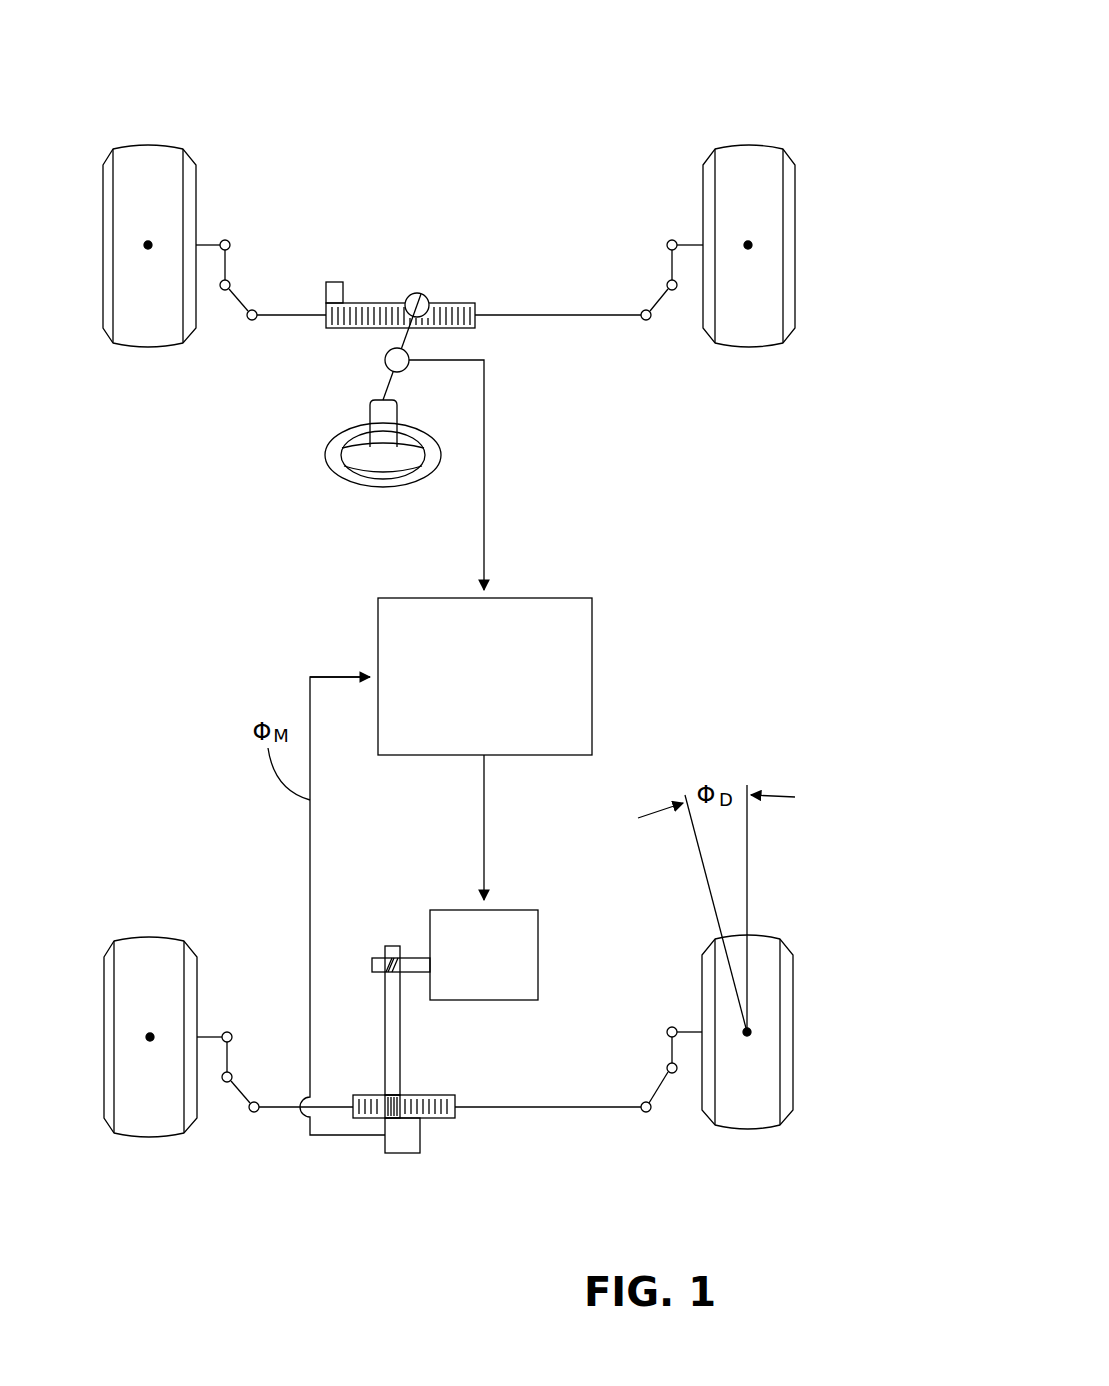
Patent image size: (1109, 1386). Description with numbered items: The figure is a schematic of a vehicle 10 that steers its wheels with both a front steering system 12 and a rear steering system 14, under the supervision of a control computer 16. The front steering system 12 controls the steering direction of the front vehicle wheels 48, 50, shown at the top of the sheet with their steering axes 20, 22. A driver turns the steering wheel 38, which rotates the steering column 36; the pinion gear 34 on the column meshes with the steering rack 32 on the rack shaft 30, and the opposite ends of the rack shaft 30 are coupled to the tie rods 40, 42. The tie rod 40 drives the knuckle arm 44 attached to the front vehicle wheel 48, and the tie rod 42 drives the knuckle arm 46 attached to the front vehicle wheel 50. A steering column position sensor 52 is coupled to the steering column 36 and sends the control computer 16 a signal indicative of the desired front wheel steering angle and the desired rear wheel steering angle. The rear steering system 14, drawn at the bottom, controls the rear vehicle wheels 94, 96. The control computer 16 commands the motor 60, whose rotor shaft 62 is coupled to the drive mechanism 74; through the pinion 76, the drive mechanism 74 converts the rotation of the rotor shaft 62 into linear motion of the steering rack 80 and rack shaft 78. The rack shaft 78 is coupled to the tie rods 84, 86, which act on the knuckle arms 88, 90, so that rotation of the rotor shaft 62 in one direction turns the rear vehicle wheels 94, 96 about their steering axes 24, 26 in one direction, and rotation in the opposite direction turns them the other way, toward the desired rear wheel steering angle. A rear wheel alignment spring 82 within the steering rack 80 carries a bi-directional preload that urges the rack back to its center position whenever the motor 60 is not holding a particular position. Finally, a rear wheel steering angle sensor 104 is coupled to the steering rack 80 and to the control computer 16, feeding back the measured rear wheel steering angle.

The vehicle 10 is at (720, 112).
The front steering system 12 is at (836, 190).
The rear steering system 14 is at (833, 982).
The control computer 16 is at (592, 637).
The front left wheel 20 is at (146, 249).
The front right wheel 22 is at (750, 248).
The steering axis 24 is at (148, 1035).
The steering axis 26 is at (750, 1035).
The rack shaft 30 is at (553, 313).
The steering rack 32 is at (368, 303).
The pinion gear 34 is at (420, 296).
The steering column 36 is at (392, 378).
The steering wheel 38 is at (353, 478).
The tie rod 40 is at (248, 300).
The tie rod 42 is at (655, 298).
The knuckle arm 44 is at (229, 268).
The knuckle arm 46 is at (668, 268).
The front vehicle wheel 48 is at (130, 350).
The front vehicle wheel 50 is at (768, 350).
The steering column position sensor 52 is at (388, 368).
The motor 60 is at (538, 930).
The rotor shaft 62 is at (378, 958).
The drive mechanism 74 is at (385, 1040).
The pinion 76 is at (400, 1097).
The rack shaft 78 is at (520, 1118).
The steering rack 80 is at (440, 1118).
The rear wheel alignment spring 82 is at (440, 1095).
The tie rod 84 is at (250, 1097).
The tie rod 86 is at (652, 1098).
The knuckle arm 88 is at (231, 1056).
The knuckle arm 90 is at (668, 1052).
The rear vehicle wheel 94 is at (150, 1140).
The rear vehicle wheel 96 is at (768, 1133).
The rear wheel steering angle sensor 104 is at (405, 1155).